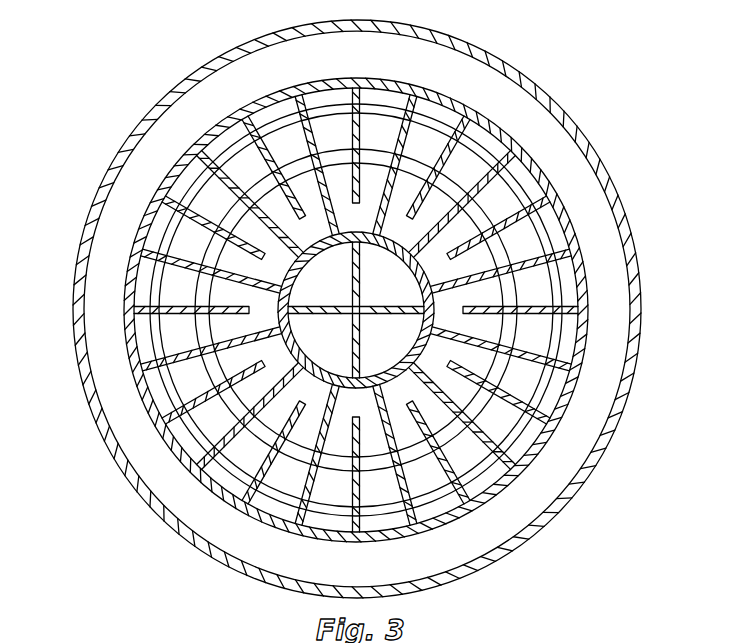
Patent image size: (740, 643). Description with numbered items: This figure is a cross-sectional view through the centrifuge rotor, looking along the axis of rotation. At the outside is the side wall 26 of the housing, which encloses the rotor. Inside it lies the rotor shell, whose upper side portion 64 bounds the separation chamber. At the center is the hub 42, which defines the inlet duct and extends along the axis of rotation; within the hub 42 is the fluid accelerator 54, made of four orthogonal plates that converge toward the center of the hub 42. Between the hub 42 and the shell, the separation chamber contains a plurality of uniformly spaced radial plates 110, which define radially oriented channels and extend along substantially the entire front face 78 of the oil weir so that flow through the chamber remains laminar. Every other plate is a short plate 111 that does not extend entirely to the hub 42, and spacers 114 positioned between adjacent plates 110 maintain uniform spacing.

The side wall 26 is at (545, 98).
The hub 42 is at (397, 316).
The fluid accelerator 54 is at (480, 488).
The upper side portion 64 is at (553, 448).
The front face 78 is at (527, 332).
The radial plates 110 is at (530, 305).
The short plate 111 is at (435, 160).
The spacers 114 is at (527, 250).